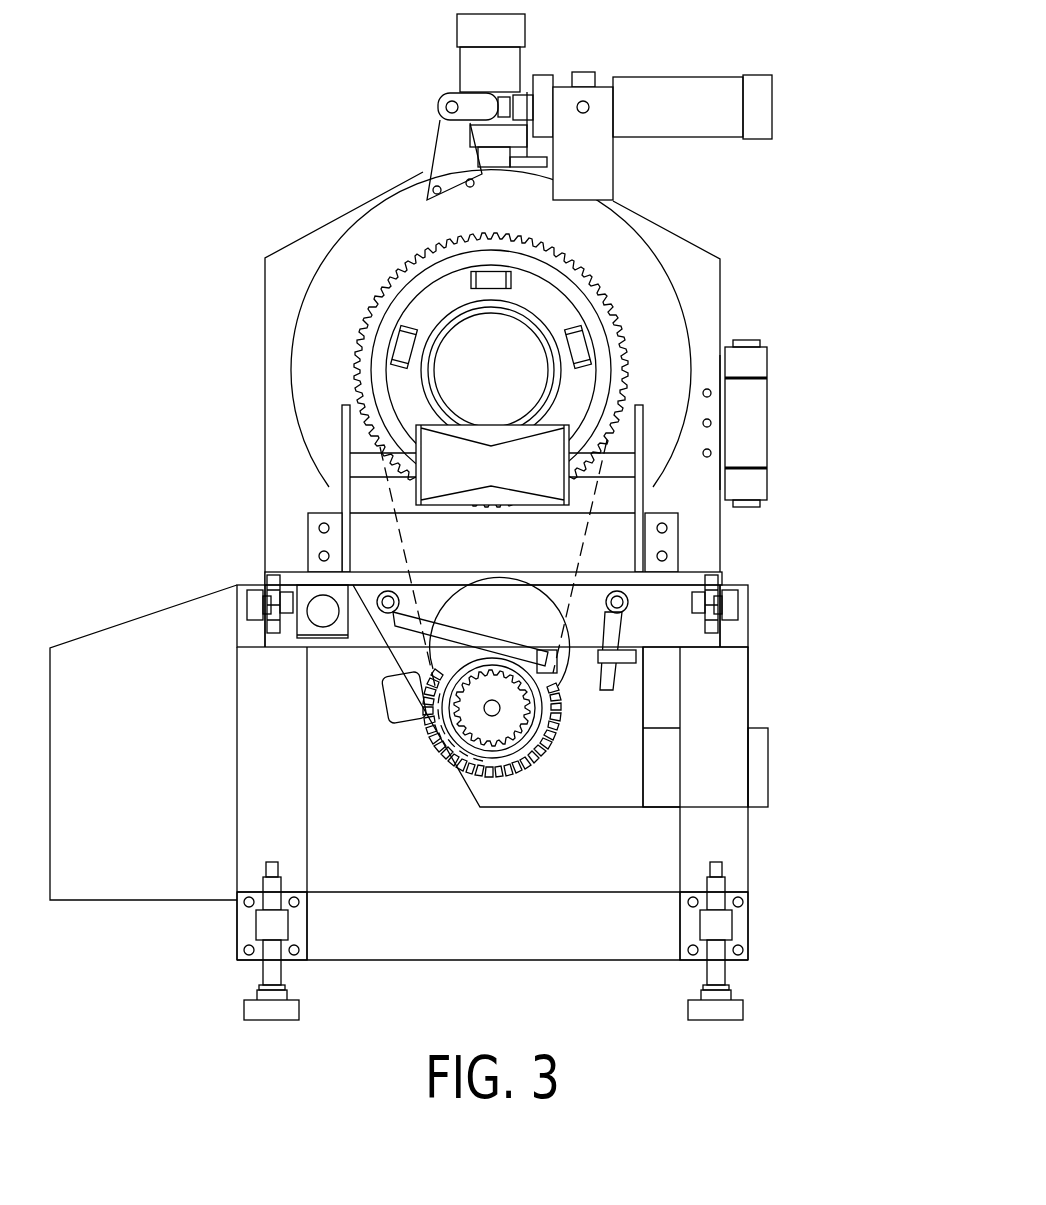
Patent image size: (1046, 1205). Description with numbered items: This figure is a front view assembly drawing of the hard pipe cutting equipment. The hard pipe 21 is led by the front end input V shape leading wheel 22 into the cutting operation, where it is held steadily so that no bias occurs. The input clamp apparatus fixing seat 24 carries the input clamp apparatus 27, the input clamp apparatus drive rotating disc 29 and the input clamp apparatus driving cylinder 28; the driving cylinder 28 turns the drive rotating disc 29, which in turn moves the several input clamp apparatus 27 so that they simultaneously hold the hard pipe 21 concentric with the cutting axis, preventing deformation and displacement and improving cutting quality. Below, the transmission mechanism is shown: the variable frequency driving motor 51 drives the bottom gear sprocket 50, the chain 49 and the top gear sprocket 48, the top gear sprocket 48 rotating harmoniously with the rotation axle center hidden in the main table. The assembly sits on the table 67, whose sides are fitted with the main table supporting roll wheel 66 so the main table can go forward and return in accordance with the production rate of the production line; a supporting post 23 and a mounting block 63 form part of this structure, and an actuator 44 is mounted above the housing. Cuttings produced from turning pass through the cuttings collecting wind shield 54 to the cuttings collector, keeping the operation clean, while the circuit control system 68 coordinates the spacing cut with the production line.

The hard pipe 21 is at (555, 405).
The front end input V shape leading wheel 22 is at (542, 474).
The support posts 23 is at (355, 553).
The input clamp apparatus fixing seat 24 is at (288, 292).
The input clamp apparatus 27 is at (592, 343).
The input clamp apparatus driving cylinder 28 is at (768, 130).
The input clamp apparatus drive rotating disc 29 is at (315, 362).
The actuator cylinder 44 is at (518, 40).
The top gear sprocket 48 is at (592, 476).
The chain 49 is at (583, 525).
The bottom gear sprocket 50 is at (508, 722).
The variable frequency driving motor 51 is at (550, 673).
The cuttings collecting wind shield 54 is at (668, 757).
The mounting block 63 is at (307, 590).
The main table supporting roll wheel 66 is at (255, 603).
The table 67 is at (685, 896).
The circuit control system 68 is at (96, 652).